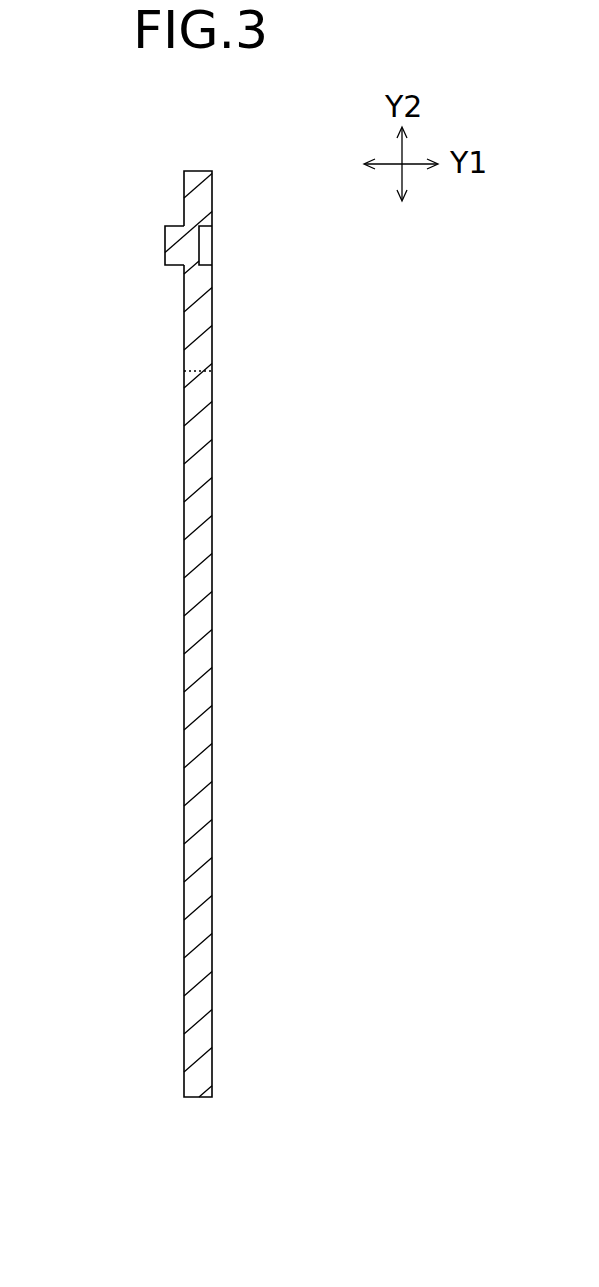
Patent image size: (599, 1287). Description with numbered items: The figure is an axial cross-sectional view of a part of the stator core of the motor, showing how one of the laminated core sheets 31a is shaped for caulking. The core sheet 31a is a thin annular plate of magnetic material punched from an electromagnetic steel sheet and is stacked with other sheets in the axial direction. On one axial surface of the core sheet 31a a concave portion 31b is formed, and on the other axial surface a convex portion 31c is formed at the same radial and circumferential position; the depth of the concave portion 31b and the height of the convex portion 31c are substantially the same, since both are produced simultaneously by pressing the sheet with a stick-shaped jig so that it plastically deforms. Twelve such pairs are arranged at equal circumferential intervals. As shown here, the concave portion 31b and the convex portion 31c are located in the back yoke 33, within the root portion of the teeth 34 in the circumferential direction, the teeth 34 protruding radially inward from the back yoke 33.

The core sheet 31a is at (195, 171).
The concave portion 31b is at (201, 227).
The convex portion 31c is at (166, 226).
The back yoke 33 is at (212, 348).
The teeth 34 is at (212, 460).